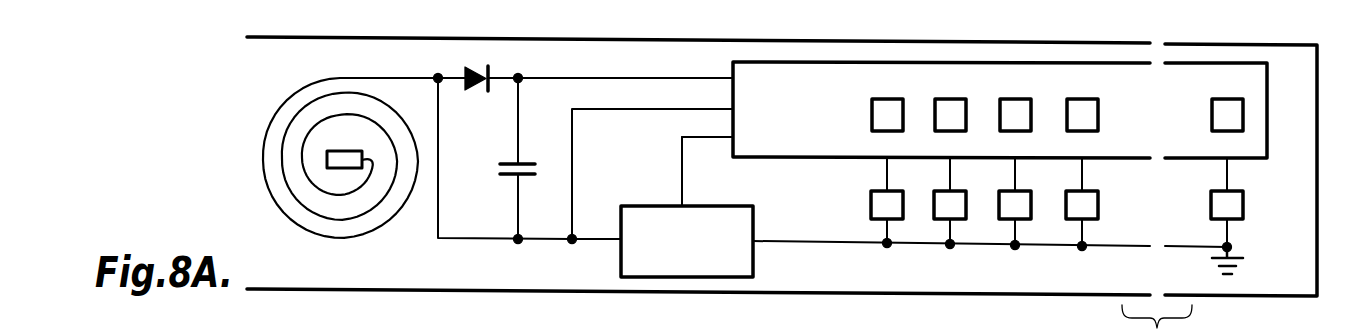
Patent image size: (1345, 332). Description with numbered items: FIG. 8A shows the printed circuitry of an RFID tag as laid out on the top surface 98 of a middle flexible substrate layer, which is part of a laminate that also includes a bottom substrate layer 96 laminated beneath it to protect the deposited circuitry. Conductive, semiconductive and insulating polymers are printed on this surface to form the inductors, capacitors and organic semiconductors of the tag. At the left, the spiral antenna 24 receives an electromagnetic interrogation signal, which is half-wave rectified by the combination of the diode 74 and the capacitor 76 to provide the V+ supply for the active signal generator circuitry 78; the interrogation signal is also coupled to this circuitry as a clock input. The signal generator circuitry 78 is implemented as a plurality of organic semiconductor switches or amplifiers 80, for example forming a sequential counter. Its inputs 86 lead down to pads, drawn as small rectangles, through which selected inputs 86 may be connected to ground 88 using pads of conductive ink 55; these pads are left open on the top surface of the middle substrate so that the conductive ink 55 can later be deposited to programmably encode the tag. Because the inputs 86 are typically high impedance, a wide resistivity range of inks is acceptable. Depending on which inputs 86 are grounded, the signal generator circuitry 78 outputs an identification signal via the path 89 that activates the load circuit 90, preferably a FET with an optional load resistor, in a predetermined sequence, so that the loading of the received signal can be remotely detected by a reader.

The bottom substrate layer 96 is at (247, 66).
The antenna 24 is at (360, 239).
The diode 74 is at (475, 90).
The capacitor 76 is at (515, 175).
The path 89 is at (682, 165).
The load circuit 90 is at (753, 228).
The signal generator circuitry 78 is at (775, 158).
The semiconductor switches or amplifiers 80 is at (872, 131).
The inputs 86 is at (1227, 172).
The conductive ink 55 is at (1243, 208).
The ground 88 is at (1232, 258).
The top surface 98 is at (1240, 331).